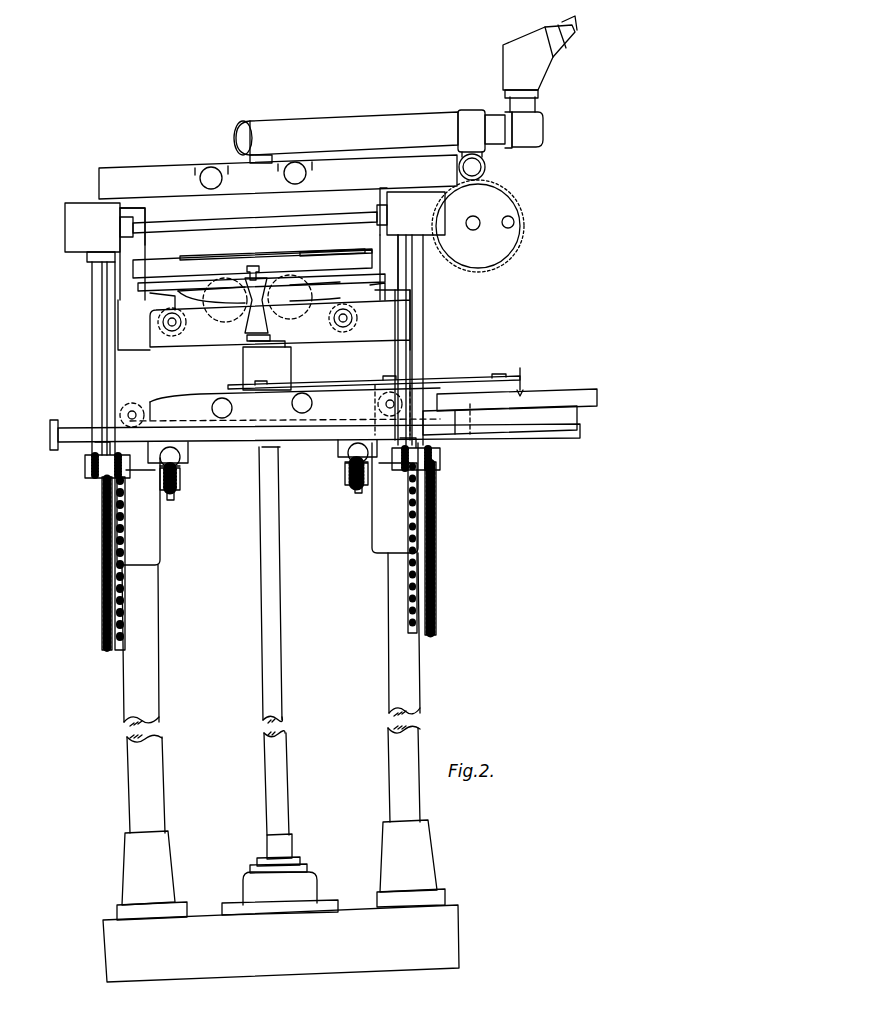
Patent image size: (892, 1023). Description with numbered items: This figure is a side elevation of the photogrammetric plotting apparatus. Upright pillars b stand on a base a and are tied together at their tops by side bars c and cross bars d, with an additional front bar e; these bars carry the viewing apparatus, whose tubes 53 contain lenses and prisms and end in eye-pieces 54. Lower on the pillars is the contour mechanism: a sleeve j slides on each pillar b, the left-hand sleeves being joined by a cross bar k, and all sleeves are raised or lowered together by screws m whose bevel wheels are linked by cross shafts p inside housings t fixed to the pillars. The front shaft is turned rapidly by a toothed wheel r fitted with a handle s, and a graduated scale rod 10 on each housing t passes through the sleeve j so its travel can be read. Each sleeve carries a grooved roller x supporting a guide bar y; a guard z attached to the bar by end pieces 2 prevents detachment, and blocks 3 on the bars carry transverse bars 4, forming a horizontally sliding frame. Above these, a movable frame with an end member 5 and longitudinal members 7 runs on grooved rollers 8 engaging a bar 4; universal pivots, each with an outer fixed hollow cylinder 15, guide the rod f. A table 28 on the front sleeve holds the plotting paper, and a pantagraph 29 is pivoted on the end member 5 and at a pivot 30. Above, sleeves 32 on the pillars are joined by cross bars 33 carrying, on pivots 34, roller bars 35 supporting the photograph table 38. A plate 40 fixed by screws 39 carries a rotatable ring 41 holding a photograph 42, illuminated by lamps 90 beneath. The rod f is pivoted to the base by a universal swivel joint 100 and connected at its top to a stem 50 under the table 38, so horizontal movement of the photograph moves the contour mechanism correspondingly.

The base a is at (450, 908).
The upright pillars b is at (156, 706).
The rod f is at (278, 614).
The universal swivel joint 100 is at (292, 848).
The transverse bars 4 is at (78, 433).
The sleeve j is at (162, 558).
The screws m is at (104, 576).
The graduated scale rod 10 is at (122, 538).
The blocks 3 is at (185, 450).
The guide bar y is at (182, 462).
The end pieces 2 is at (182, 482).
The roller x is at (179, 490).
The guard z is at (171, 501).
The cross bar k is at (280, 446).
The deeply grooved rollers 8 is at (120, 412).
The end member 5 is at (196, 402).
The longitudinal members 7 is at (292, 404).
The pantagraph 29 is at (494, 380).
The table 28 is at (546, 402).
The pivot 30 is at (406, 372).
The sleeves 32 is at (125, 318).
The roller bars 35 is at (160, 330).
The pivots 34 is at (172, 332).
The table 38 is at (140, 285).
The lamps 90 is at (259, 304).
The stem 50 is at (258, 318).
The cross bars 33 is at (300, 342).
The outer fixed hollow cylinder 15 is at (243, 366).
The plate 40 is at (176, 262).
The rotatable ring 41 is at (236, 258).
The screws 39 is at (254, 266).
The photograph 42 is at (292, 258).
The cross shafts p is at (320, 222).
The housings t is at (84, 216).
The side bars c is at (153, 177).
The cross bars d is at (211, 167).
The front bar e is at (485, 167).
The tubes 53 is at (398, 128).
The eye-pieces 54 is at (540, 55).
The toothed wheel r is at (507, 254).
The handle s is at (515, 223).